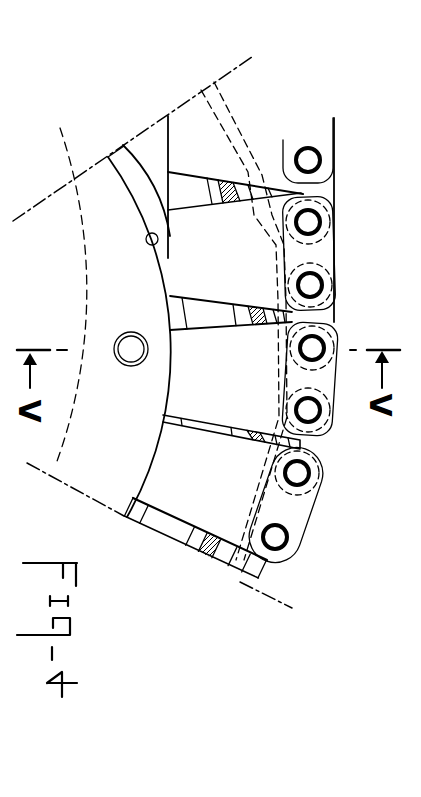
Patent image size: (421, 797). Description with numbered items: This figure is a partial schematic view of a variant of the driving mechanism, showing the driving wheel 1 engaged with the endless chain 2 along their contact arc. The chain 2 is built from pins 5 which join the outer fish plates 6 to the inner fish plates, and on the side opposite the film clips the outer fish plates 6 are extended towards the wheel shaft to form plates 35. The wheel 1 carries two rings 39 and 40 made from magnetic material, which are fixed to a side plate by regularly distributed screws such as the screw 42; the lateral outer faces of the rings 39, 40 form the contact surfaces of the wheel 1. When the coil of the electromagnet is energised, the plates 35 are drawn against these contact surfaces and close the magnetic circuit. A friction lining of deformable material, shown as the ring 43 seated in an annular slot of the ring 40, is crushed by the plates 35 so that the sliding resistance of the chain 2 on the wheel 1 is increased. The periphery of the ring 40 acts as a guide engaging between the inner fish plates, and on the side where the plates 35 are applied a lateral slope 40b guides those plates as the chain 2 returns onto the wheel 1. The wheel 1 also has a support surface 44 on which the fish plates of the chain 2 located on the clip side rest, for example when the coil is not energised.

The driving wheel 1 is at (150, 110).
The chain 2 is at (329, 340).
The pins 5 is at (360, 458).
The outer fish plates 6 is at (343, 541).
The plates 35 is at (158, 580).
The ring 39 is at (71, 278).
The ring 40 is at (204, 176).
The slope 40b is at (252, 176).
The screw 42 is at (115, 411).
The ring 43 is at (217, 632).
The support surface 44 is at (146, 241).